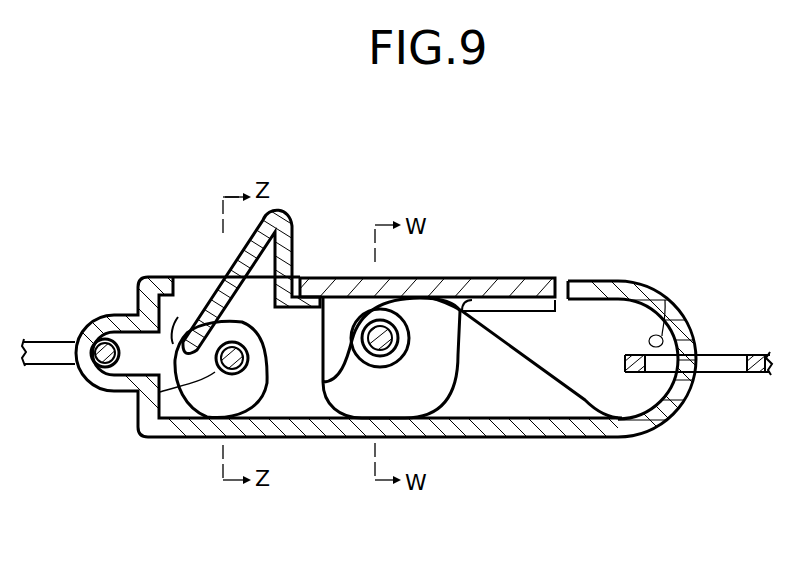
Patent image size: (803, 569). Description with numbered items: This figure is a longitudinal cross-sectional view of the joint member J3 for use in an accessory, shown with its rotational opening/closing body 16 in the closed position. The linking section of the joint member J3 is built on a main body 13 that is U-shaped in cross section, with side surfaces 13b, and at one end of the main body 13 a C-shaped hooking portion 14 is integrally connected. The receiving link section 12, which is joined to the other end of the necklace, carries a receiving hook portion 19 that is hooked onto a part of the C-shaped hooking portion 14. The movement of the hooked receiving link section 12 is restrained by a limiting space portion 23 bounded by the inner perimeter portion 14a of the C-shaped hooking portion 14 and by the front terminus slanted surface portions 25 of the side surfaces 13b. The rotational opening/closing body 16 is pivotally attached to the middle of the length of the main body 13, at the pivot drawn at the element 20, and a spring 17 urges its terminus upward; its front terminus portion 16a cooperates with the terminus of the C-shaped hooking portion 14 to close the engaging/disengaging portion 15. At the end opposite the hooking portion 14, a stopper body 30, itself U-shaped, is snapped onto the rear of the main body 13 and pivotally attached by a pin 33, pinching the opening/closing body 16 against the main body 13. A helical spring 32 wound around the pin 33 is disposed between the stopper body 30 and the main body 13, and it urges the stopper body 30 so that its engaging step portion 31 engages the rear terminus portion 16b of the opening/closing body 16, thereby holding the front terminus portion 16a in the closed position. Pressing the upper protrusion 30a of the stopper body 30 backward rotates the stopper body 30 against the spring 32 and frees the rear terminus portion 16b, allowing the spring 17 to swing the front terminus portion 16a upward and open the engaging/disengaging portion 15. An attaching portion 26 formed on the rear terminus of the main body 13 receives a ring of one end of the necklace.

The receiving link section 12 is at (749, 374).
The main body 13 is at (459, 436).
The side surface of the main body 13b is at (553, 405).
The C-shaped hooking portion 14 is at (673, 305).
The inner perimeter portion of the C-shaped hooking portion 14a is at (690, 334).
The engaging/disengaging portion 15 is at (564, 281).
The rotational opening/closing body 16 is at (428, 278).
The front terminus portion of the rotational opening/closing body 16a is at (530, 298).
The rear terminus portion of the rotational opening/closing body 16b is at (308, 277).
The spring 17 is at (412, 388).
The receiving hook portion 19 is at (638, 345).
The pivot pin 20 is at (380, 350).
The limiting space portion 23 is at (540, 327).
The front terminus slanted surface portion 25 is at (582, 392).
The attaching portion 26 is at (83, 382).
The stopper body 30 is at (222, 275).
The upper protrusion of the stopper body 30a is at (289, 220).
The engaging step portion 31 is at (277, 306).
The helical spring 32 is at (255, 404).
The pin 33 is at (215, 372).
The joint member J3 is at (143, 272).